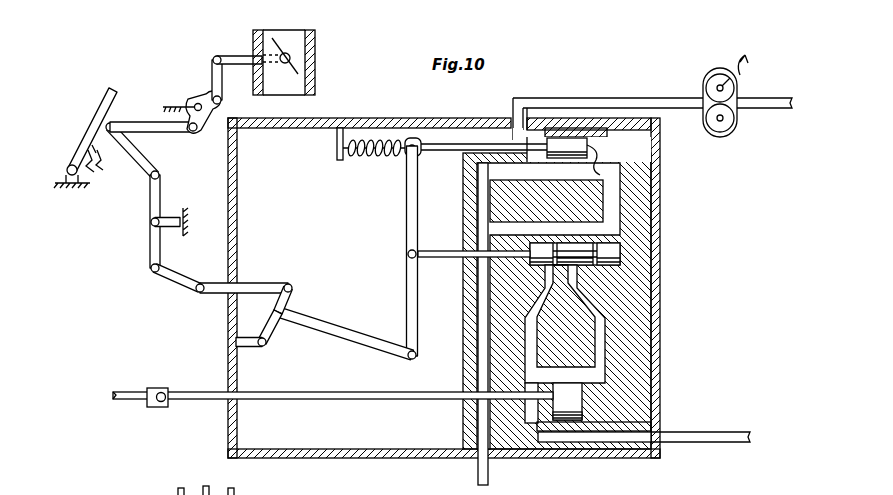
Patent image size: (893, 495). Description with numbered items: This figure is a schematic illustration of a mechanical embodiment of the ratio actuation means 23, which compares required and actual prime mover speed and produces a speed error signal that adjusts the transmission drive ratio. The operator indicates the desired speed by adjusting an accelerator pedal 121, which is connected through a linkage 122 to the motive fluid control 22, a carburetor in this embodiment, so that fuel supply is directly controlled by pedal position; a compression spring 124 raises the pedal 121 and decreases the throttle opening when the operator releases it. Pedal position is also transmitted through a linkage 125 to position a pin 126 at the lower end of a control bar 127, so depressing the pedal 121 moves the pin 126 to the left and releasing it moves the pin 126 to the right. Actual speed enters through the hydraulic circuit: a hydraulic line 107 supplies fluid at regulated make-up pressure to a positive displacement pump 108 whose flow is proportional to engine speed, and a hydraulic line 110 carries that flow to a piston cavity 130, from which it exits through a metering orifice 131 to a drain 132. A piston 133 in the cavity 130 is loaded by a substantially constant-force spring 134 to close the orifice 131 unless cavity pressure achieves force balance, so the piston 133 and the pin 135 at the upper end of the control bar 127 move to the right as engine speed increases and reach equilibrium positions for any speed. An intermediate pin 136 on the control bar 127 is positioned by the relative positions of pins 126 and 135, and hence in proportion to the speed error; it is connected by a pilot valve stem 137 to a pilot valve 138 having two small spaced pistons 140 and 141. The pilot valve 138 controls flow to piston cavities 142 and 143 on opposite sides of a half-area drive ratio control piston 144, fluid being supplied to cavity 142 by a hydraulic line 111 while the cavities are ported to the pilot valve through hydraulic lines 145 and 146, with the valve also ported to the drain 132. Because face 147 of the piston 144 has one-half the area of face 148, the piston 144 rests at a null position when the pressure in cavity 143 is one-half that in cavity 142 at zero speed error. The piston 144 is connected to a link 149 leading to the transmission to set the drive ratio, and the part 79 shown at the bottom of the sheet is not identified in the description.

The motive fluid control 22 is at (317, 66).
The ratio actuation means 23 is at (660, 240).
The keys 79 is at (158, 494).
The hydraulic line 107 is at (770, 100).
The positive displacement pump 108 is at (728, 128).
The hydraulic line 110 is at (641, 102).
The hydraulic line 111 is at (724, 440).
The accelerator pedal 121 is at (90, 127).
The linkage 122 is at (142, 94).
The compression spring 124 is at (88, 160).
The linkage 125 is at (292, 260).
The pin 126 is at (408, 358).
The control bar 127 is at (407, 291).
The piston cavity 130 is at (509, 120).
The metering orifice 131 is at (548, 162).
The drain 132 is at (478, 472).
The piston 133 is at (598, 166).
The spring 134 is at (363, 160).
The pin 135 is at (422, 162).
The intermediate pin 136 is at (407, 254).
The pilot valve stem 137 is at (428, 259).
The pilot valve 138 is at (542, 192).
The pilot valve piston 140 is at (614, 238).
The pilot valve piston 141 is at (541, 220).
The piston cavity 142 is at (545, 412).
The piston cavity 143 is at (600, 407).
The drive ratio control piston 144 is at (572, 380).
The hydraulic line 145 is at (545, 290).
The hydraulic line 146 is at (602, 327).
The face 147 is at (553, 384).
The face 148 is at (583, 395).
The link 149 is at (135, 393).